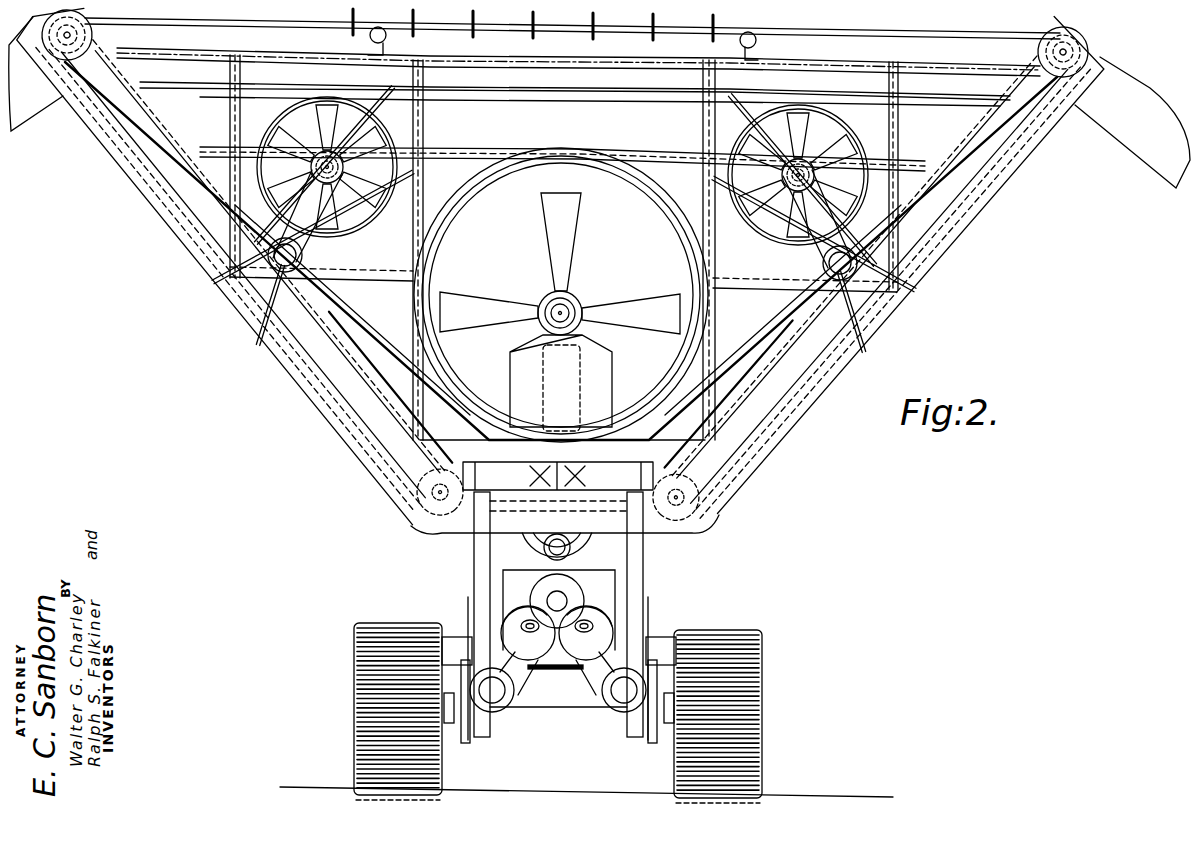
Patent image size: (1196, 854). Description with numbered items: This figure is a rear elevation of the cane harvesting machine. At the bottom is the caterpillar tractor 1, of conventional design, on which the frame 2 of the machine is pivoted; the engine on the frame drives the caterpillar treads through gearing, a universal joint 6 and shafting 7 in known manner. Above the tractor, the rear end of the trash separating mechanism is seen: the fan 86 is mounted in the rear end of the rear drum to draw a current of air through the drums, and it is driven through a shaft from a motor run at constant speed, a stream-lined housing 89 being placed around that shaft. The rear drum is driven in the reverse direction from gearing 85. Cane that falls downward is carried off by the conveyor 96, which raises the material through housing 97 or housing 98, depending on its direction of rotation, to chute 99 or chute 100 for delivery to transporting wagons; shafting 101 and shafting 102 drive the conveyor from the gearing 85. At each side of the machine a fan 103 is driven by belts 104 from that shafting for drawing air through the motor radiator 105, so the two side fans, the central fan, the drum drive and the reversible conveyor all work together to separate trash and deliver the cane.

The caterpillar tractor 1 is at (392, 633).
The frame 2 is at (465, 95).
The universal joint 6 is at (573, 598).
The shafting 7 is at (512, 658).
The gearing 85 is at (592, 486).
The fan 86 is at (627, 310).
The stream-lined housing 89 is at (592, 380).
The conveyor 96 is at (826, 33).
The housing 97 is at (812, 410).
The housing 98 is at (347, 447).
The chute 99 is at (1150, 155).
The chute 100 is at (52, 105).
The shafting 101 is at (363, 320).
The shafting 102 is at (752, 333).
The fan 103 is at (280, 130).
The belts 104 is at (300, 248).
The motor radiator 105 is at (248, 127).